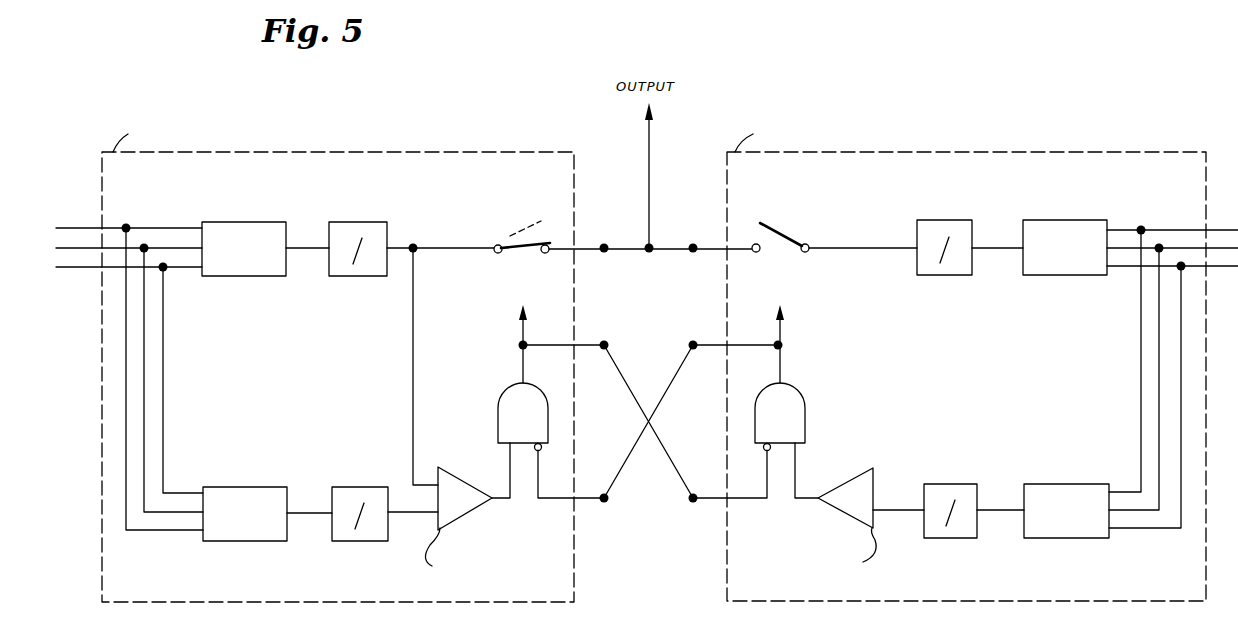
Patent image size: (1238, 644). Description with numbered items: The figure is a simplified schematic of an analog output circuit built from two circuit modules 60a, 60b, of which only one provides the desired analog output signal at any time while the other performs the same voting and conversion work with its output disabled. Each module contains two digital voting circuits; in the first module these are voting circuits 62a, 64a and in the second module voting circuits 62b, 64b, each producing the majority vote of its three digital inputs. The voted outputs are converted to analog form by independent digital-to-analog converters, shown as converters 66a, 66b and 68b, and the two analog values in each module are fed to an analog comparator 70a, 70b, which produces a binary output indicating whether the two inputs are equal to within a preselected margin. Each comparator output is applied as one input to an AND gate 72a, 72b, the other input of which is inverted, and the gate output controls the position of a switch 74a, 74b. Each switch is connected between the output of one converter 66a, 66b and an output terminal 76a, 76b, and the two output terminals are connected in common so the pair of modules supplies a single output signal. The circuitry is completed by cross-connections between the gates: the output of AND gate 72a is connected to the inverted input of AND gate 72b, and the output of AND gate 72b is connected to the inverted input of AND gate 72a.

The circuit module 60a is at (380, 152).
The circuit module 60b is at (1038, 152).
The voting circuit 62a is at (233, 276).
The voting circuit 62b is at (1057, 275).
The voting circuit 64a is at (243, 487).
The voting circuit 64b is at (1048, 483).
The digital-to-analog converter 66a is at (345, 276).
The digital-to-analog converter 66b is at (936, 275).
The digital-to-analog converter 68b is at (340, 487).
The analog comparator 70a is at (468, 477).
The analog comparator 70b is at (845, 477).
The AND gate 72a is at (500, 397).
The AND gate 72b is at (806, 395).
The switch 74a is at (513, 221).
The switch 74b is at (795, 227).
The output terminal 76a is at (604, 244).
The output terminal 76b is at (693, 244).